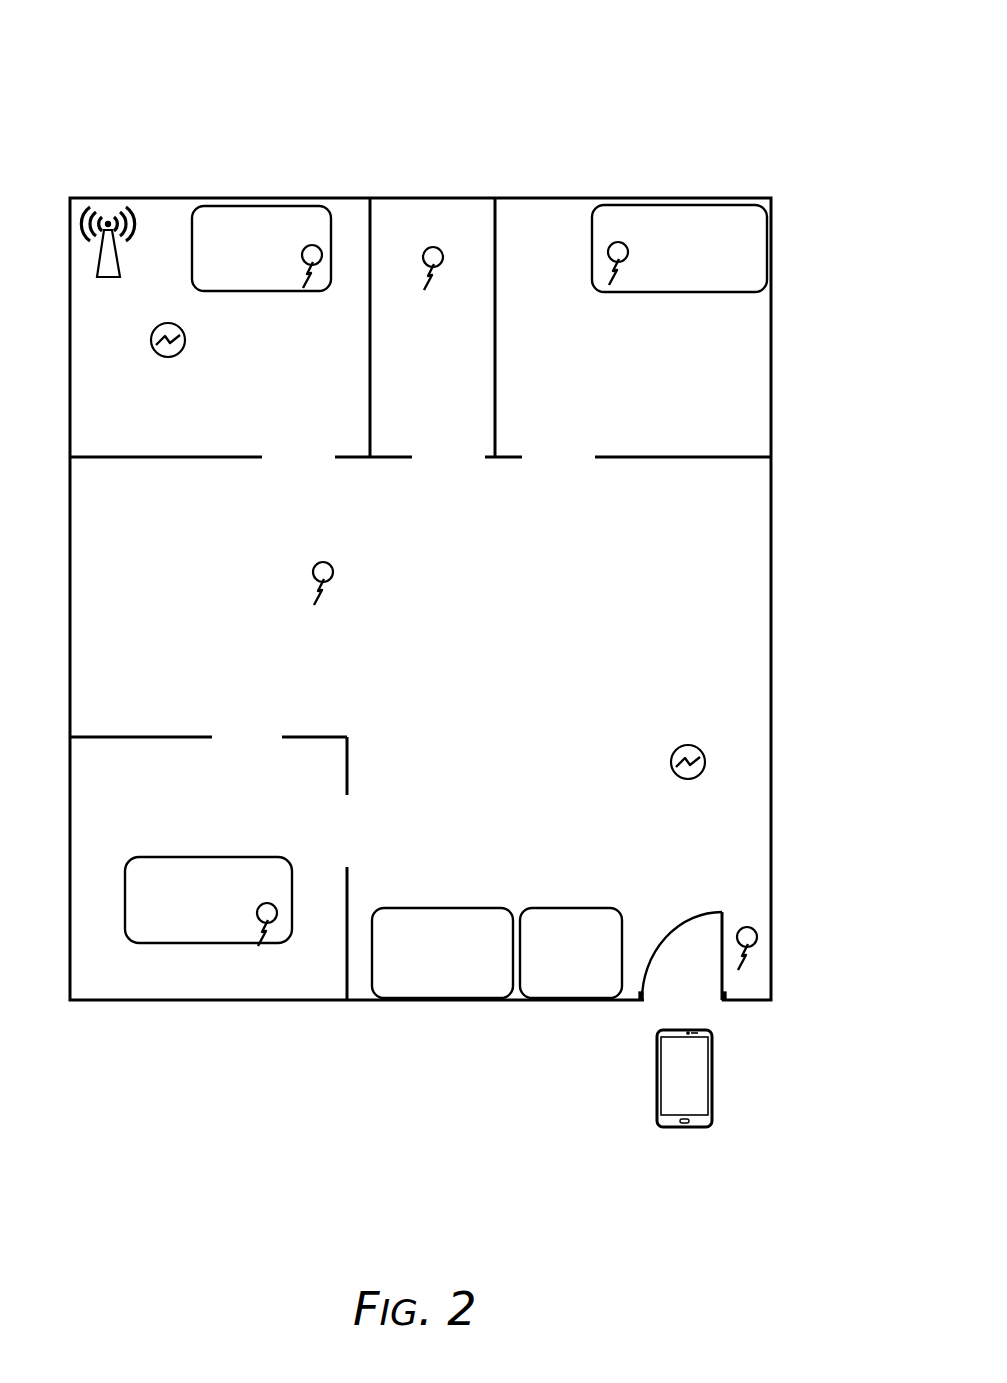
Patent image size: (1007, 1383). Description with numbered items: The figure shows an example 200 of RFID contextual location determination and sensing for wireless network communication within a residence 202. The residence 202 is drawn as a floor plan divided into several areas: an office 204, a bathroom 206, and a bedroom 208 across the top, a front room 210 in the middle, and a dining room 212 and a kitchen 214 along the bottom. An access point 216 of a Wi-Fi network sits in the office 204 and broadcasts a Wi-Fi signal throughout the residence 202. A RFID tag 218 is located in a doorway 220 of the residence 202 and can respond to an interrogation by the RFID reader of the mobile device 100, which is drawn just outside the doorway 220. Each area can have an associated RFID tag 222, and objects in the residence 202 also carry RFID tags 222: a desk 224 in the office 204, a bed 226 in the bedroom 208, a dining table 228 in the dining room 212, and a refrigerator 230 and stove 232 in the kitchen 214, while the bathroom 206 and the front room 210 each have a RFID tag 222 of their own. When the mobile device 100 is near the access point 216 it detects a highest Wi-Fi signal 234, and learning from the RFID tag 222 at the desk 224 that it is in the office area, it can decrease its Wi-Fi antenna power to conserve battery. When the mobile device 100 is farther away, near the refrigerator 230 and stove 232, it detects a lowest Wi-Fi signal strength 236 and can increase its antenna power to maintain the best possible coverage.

The mobile device 100 is at (684, 1097).
The example 200 is at (580, 58).
The residence 202 is at (348, 198).
The office 204 is at (260, 337).
The bathroom 206 is at (433, 337).
The bedroom 208 is at (627, 337).
The front room 210 is at (225, 589).
The dining room 212 is at (207, 800).
The kitchen 214 is at (492, 815).
The access point 216 is at (107, 259).
The RFID tag 218 is at (748, 933).
The doorway 220 is at (682, 956).
The RFID tag 222 is at (315, 270).
The desk 224 is at (261, 248).
The bed 226 is at (679, 248).
The dining table 228 is at (208, 900).
The refrigerator 230 is at (442, 953).
The stove 232 is at (571, 953).
The highest Wi-Fi signal 234 is at (168, 379).
The lowest Wi-Fi signal strength 236 is at (688, 802).